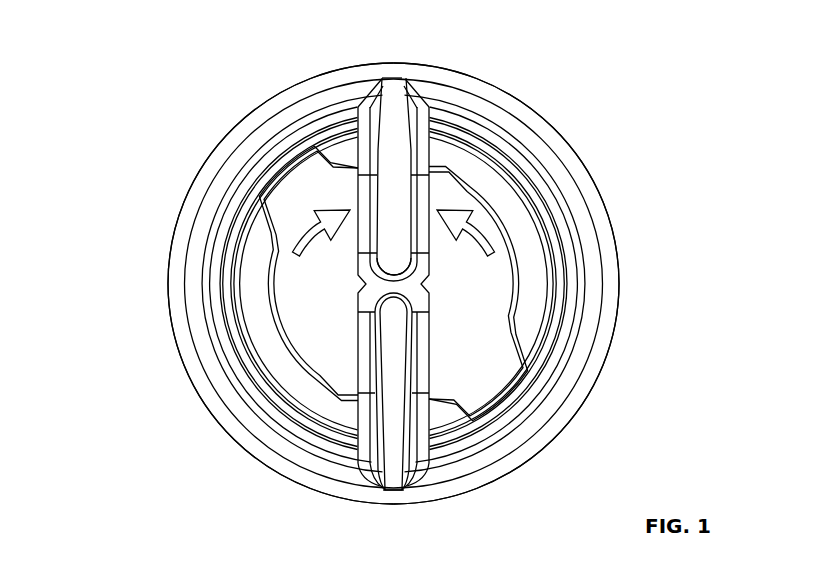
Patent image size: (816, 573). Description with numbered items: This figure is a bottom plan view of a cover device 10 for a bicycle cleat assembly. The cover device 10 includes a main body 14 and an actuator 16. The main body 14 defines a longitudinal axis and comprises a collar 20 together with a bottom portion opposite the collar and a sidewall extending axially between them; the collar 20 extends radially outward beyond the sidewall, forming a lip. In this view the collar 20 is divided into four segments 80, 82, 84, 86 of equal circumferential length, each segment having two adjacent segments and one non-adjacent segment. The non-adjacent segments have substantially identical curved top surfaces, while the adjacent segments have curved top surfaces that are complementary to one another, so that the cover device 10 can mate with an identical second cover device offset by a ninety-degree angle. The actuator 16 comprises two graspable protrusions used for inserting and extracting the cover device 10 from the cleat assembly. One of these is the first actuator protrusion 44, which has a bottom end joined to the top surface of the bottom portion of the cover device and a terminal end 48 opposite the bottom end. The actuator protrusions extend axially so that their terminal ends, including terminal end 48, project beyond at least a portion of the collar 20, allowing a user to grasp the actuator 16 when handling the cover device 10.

The cover device 10 is at (148, 75).
The main body 14 is at (626, 216).
The actuator 16 is at (350, 351).
The collar 20 is at (186, 232).
The first actuator protrusion 44 is at (414, 201).
The terminal end 48 is at (388, 250).
The segment 80 is at (392, 505).
The segment 82 is at (168, 296).
The segment 84 is at (390, 63).
The segment 86 is at (621, 280).